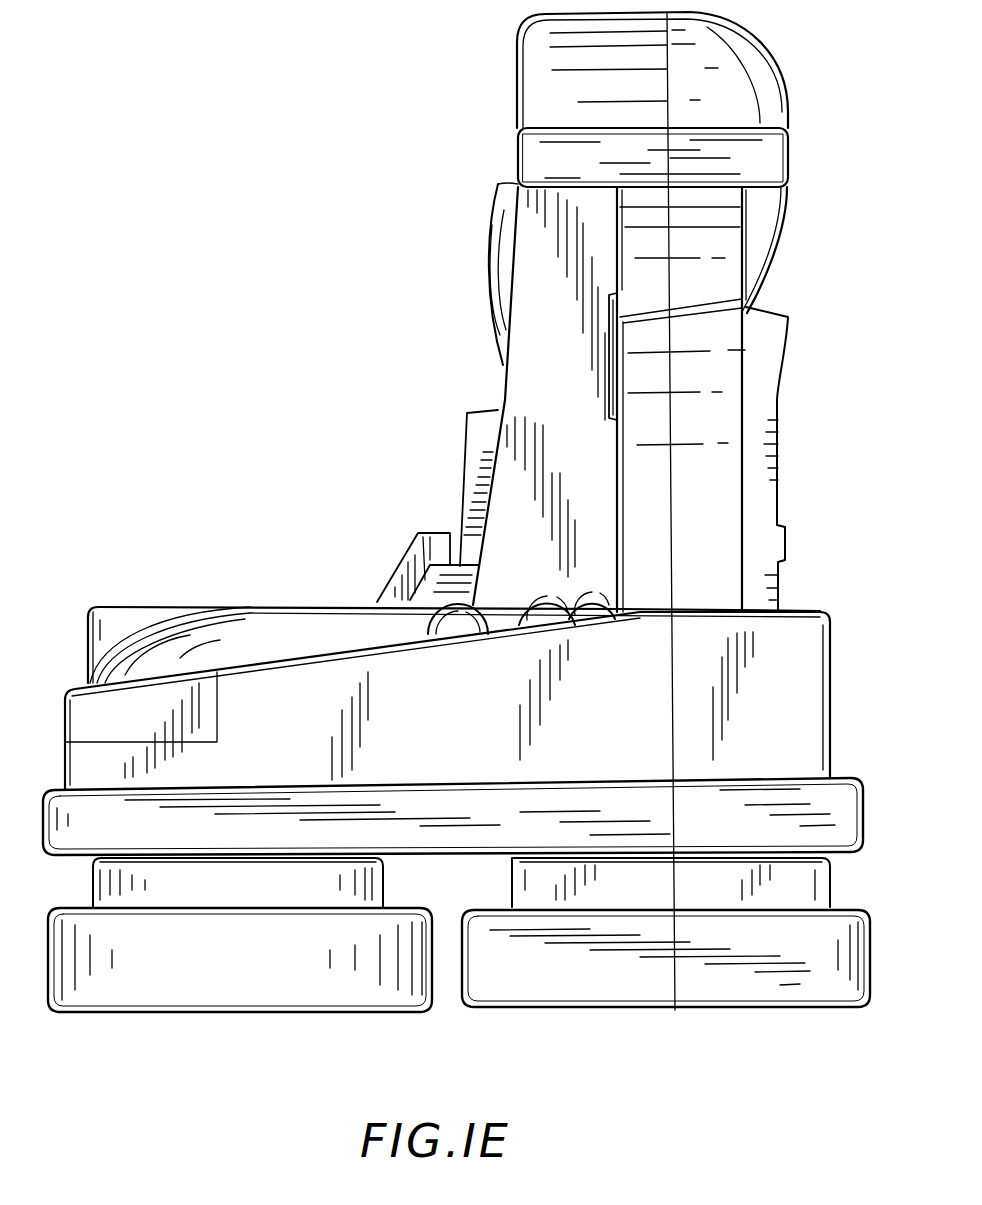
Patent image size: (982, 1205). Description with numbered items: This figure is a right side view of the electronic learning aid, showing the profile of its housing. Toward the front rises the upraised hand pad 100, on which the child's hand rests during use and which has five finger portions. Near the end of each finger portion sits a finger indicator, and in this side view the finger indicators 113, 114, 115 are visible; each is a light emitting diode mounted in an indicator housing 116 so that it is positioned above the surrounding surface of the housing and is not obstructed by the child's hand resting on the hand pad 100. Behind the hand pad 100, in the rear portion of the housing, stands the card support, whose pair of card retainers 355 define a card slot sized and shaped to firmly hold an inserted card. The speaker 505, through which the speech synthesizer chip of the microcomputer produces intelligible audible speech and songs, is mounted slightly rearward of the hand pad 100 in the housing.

The hand pad 100 is at (188, 612).
The finger indicator 113 is at (590, 585).
The finger indicator 114 is at (548, 590).
The finger indicator 115 is at (462, 567).
The indicator housing 116 is at (448, 617).
The card retainer 355 is at (476, 425).
The speaker 505 is at (606, 351).